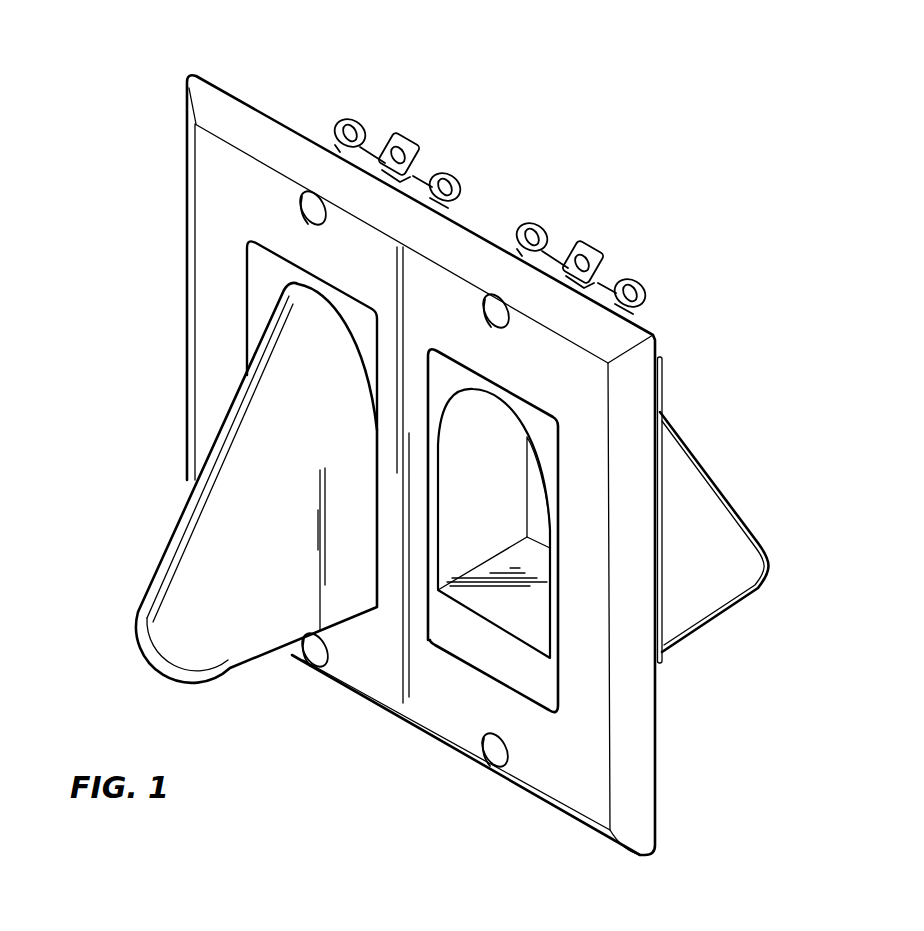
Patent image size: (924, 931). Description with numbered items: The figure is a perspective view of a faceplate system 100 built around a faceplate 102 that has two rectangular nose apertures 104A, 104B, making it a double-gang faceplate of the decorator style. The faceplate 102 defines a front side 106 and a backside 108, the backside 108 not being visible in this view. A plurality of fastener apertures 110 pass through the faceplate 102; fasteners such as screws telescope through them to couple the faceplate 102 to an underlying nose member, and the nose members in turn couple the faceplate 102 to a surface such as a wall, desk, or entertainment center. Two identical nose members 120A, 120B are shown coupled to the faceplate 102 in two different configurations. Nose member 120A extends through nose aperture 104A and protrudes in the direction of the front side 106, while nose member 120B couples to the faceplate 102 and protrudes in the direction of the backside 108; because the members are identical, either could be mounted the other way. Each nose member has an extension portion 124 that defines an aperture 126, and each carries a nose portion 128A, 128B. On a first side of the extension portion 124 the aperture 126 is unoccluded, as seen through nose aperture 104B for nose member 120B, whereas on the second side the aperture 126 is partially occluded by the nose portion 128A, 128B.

The faceplate system 100 is at (797, 152).
The faceplate 102 is at (640, 828).
The nose aperture 104A is at (367, 307).
The nose aperture 104B is at (550, 412).
The front side 106 is at (560, 782).
The backside 108 is at (667, 692).
The fastener apertures 110 is at (313, 191).
The nose member 120A is at (151, 571).
The nose member 120B is at (770, 537).
The extension portion 124 is at (533, 608).
The aperture 126 is at (476, 537).
The nose portion 128A is at (337, 438).
The nose portion 128B is at (712, 473).